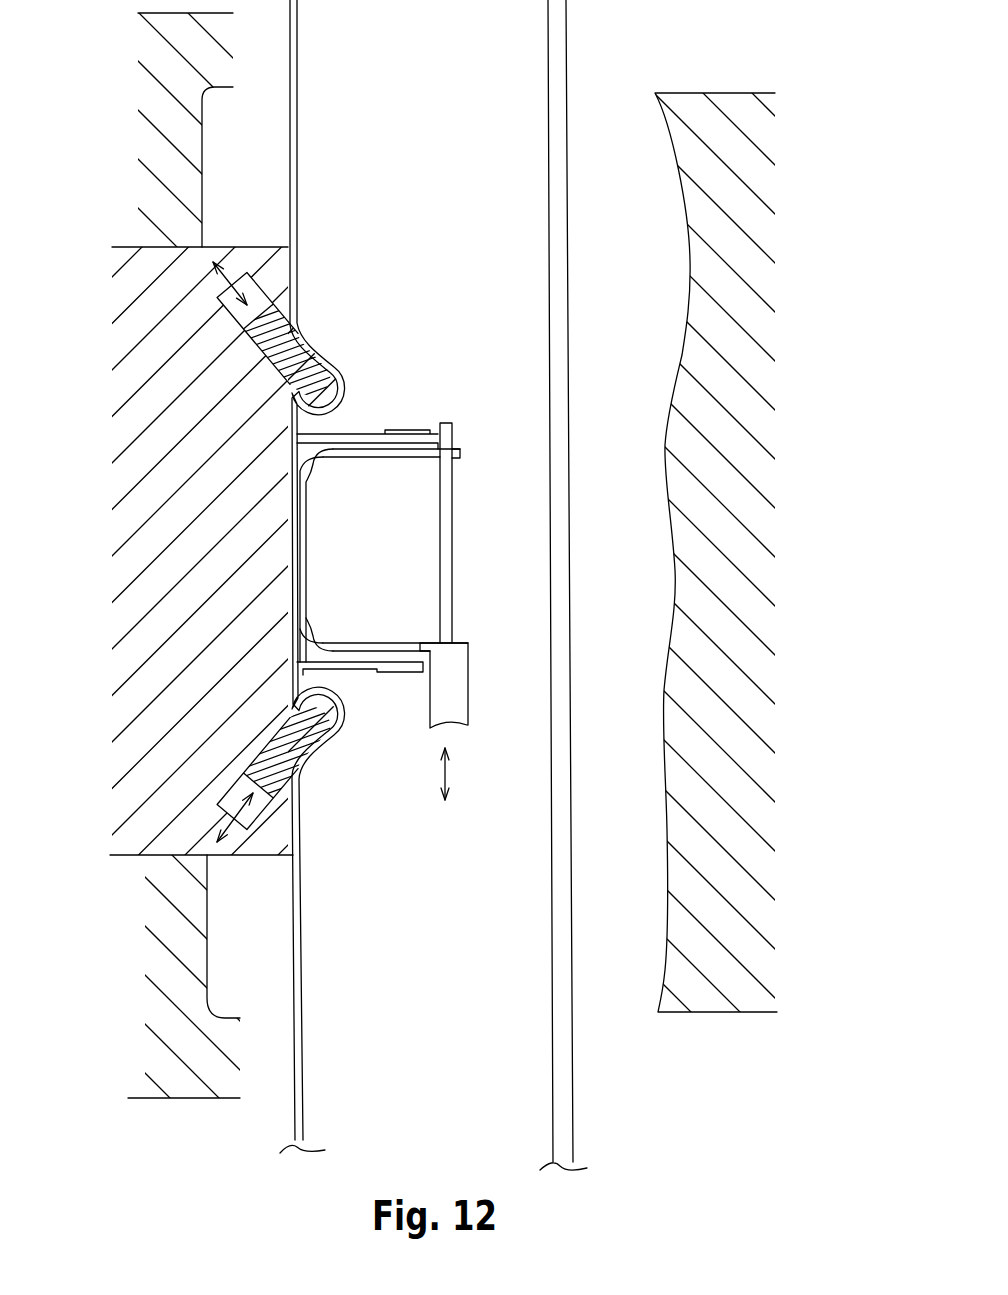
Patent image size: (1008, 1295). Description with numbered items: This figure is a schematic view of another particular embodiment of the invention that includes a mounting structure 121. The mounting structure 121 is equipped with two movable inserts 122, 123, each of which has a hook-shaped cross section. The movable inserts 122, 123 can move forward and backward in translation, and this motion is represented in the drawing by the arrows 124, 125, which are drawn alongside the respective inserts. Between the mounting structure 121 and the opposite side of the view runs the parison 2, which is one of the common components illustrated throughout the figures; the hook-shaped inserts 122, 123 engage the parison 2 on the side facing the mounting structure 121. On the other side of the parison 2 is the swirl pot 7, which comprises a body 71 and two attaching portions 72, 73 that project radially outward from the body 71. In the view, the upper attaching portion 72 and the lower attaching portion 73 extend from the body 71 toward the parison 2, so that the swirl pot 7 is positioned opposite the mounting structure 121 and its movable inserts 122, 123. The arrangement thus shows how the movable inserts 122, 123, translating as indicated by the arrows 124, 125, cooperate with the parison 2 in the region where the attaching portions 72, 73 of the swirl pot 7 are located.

The parison 2 is at (298, 80).
The swirl pot 7 is at (431, 514).
The body 71 is at (345, 645).
The attaching portion 72 is at (364, 426).
The attaching portion 73 is at (363, 673).
The mounting structure 121 is at (274, 283).
The movable insert 122 is at (300, 360).
The movable insert 123 is at (301, 751).
The arrow 124 is at (217, 296).
The arrow 125 is at (219, 812).